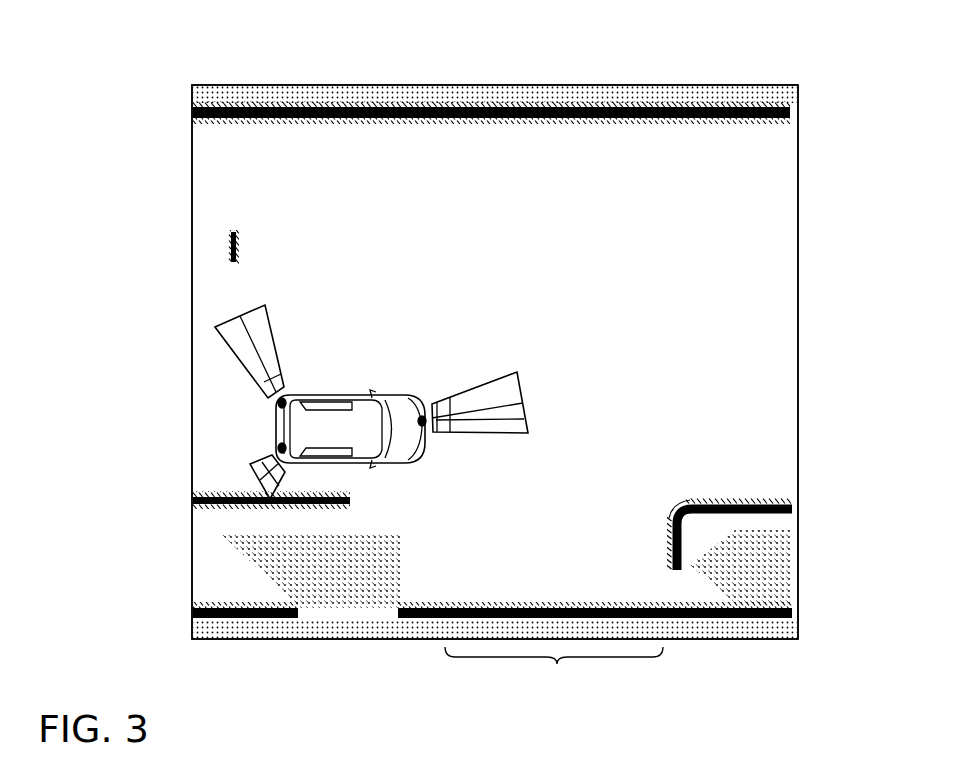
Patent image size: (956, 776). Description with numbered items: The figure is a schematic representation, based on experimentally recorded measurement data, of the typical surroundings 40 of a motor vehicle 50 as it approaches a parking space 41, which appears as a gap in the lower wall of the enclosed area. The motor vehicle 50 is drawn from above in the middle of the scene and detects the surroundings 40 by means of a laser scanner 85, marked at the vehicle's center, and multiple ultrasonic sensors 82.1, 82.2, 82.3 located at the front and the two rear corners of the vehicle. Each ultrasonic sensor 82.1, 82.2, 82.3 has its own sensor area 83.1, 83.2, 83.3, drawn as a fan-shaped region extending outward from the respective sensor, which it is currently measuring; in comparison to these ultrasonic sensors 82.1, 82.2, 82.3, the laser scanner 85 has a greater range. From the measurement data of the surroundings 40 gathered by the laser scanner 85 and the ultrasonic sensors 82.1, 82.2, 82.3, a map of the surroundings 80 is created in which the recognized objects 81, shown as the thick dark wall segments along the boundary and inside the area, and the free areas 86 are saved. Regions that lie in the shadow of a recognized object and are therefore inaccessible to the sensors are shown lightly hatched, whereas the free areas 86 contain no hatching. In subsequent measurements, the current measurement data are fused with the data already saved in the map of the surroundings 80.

The surroundings 40 is at (184, 89).
The map of the surroundings 80 is at (495, 362).
The objects 81 is at (780, 120).
The free areas 86 is at (407, 543).
The parking space 41 is at (554, 677).
The motor vehicle 50 is at (310, 422).
The laser scanner 85 is at (358, 424).
The ultrasonic sensor 82.1 is at (422, 421).
The ultrasonic sensor 82.2 is at (280, 404).
The ultrasonic sensor 82.3 is at (280, 449).
The sensor area 83.1 is at (517, 373).
The sensor area 83.2 is at (268, 320).
The sensor area 83.3 is at (258, 483).